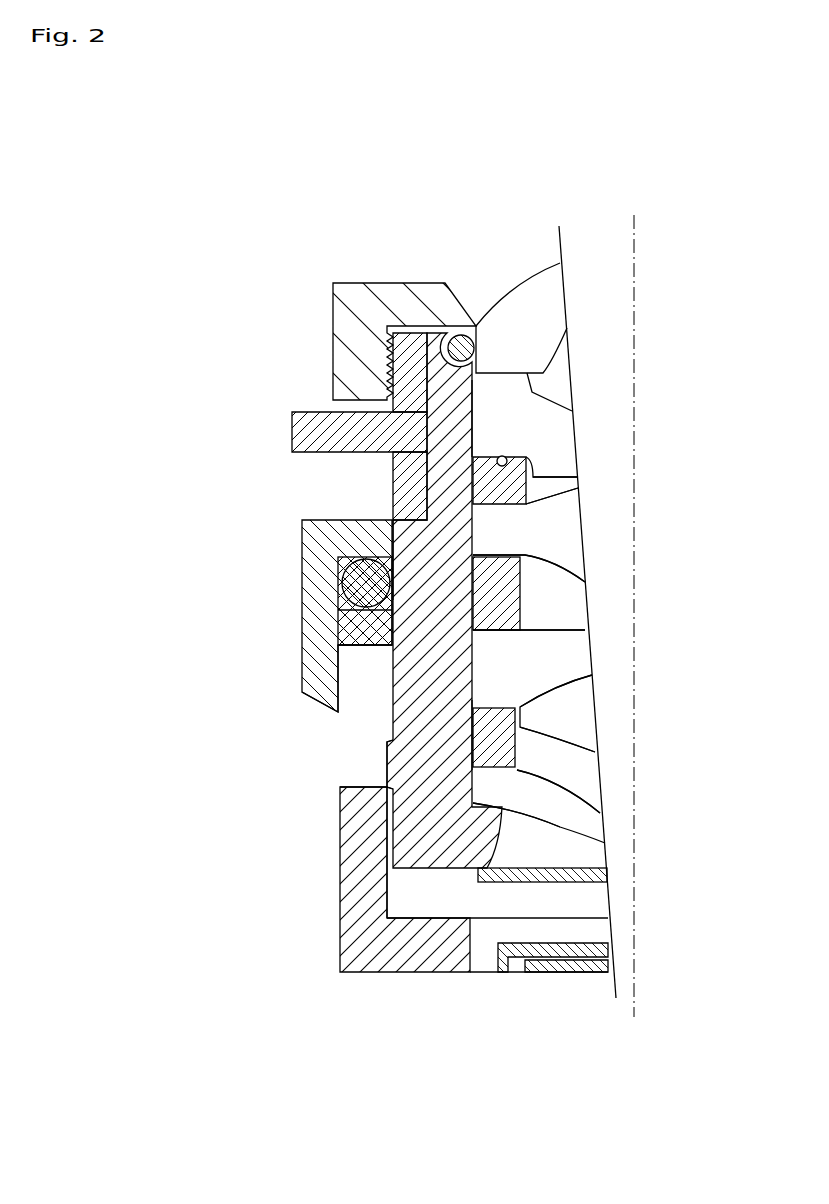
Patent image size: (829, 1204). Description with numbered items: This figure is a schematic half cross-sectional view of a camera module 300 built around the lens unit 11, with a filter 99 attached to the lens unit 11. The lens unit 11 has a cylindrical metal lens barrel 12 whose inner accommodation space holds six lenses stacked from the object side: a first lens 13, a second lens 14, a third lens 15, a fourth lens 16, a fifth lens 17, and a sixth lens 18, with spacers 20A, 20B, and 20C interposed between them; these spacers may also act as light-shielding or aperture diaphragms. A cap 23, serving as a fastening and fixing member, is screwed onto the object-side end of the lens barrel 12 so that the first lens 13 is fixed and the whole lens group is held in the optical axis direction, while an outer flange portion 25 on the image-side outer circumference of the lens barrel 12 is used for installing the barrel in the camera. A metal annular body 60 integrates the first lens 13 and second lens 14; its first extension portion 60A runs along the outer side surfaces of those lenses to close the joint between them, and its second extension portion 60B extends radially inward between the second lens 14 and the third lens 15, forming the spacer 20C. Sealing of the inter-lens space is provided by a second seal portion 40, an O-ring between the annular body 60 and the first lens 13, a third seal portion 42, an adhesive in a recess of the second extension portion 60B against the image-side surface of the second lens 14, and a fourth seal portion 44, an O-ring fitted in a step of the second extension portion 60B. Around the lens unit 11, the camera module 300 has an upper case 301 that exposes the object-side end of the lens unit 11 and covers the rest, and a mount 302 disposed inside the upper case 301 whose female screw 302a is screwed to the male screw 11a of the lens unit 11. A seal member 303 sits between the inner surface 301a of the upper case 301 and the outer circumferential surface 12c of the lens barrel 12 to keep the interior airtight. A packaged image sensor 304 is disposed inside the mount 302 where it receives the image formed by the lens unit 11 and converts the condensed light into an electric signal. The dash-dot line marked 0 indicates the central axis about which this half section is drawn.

The central axis 0 is at (634, 392).
The lens unit 11 is at (516, 240).
The male screw 11a is at (387, 762).
The lens barrel 12 is at (420, 680).
The outer circumferential surface 12c is at (338, 560).
The first lens 13 is at (542, 297).
The second lens 14 is at (560, 448).
The third lens 15 is at (567, 533).
The fourth lens 16 is at (572, 662).
The fifth lens 17 is at (577, 712).
The sixth lens 18 is at (573, 815).
The spacer 20A is at (340, 642).
The spacer 20B is at (472, 733).
The spacer 20C is at (392, 491).
The cap 23 is at (342, 327).
The outer flange portion 25 is at (475, 604).
The second seal portion 40 is at (483, 341).
The third seal portion 42 is at (483, 448).
The fourth seal portion 44 is at (510, 449).
The annular body 60 is at (442, 437).
The first extension portion 60A is at (420, 395).
The second extension portion 60B is at (347, 486).
The filter 99 is at (588, 881).
The camera module 300 is at (447, 226).
The upper case 301 is at (302, 603).
The inner surface 301a is at (338, 585).
The mount 302 is at (352, 930).
The female screw 302a is at (340, 847).
The seal member 303 is at (302, 548).
The image sensor 304 is at (547, 972).